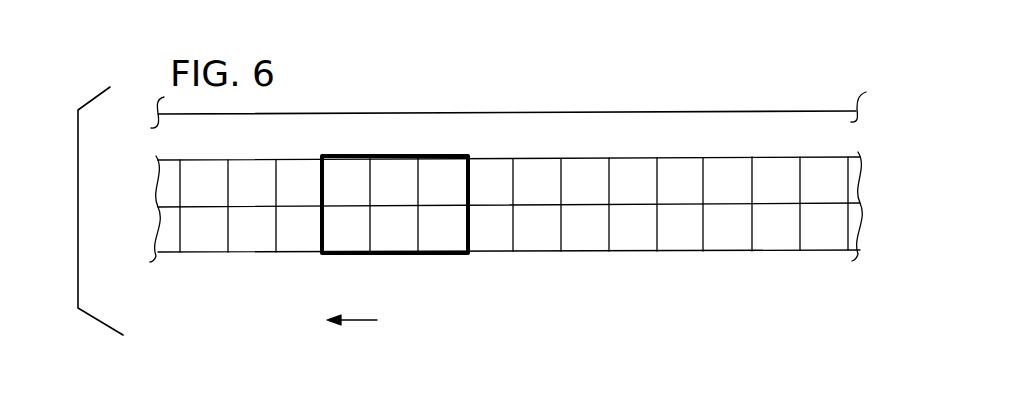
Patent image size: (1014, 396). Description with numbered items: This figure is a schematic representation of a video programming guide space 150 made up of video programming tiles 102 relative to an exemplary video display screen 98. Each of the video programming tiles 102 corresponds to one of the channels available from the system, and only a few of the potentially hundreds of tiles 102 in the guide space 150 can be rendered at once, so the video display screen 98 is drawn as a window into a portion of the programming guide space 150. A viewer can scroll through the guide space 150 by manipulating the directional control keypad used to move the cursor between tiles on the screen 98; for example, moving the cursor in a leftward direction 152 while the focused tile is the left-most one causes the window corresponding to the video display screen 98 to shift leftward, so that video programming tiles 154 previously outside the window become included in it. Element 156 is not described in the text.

The video display screen 98 is at (457, 254).
The video programming tiles 102 is at (623, 252).
The video programming guide space 150 is at (645, 112).
The leftward direction 152 is at (358, 320).
The video programming tiles 154 is at (298, 242).
The cells within block 156 is at (437, 242).